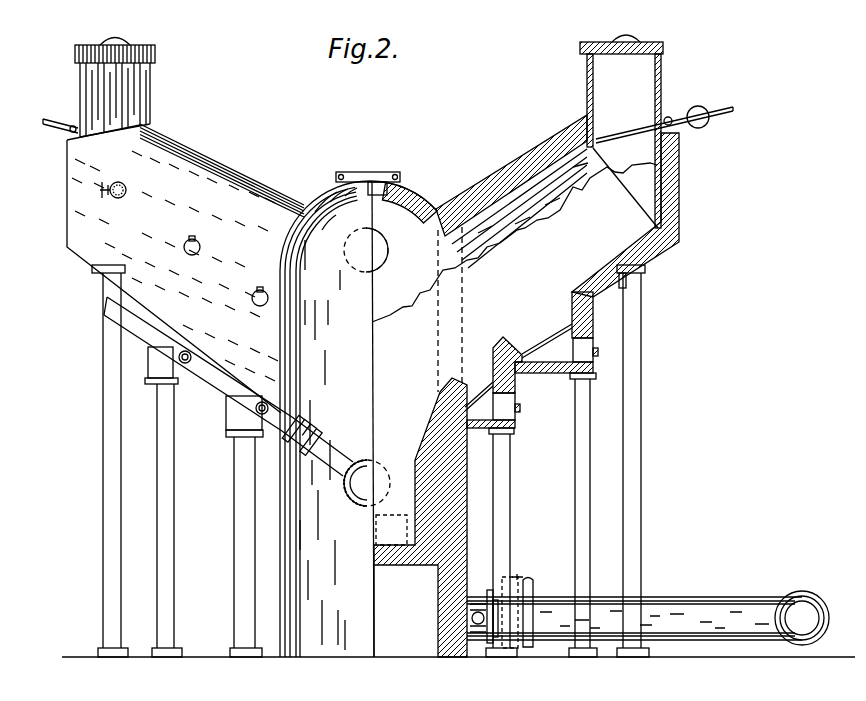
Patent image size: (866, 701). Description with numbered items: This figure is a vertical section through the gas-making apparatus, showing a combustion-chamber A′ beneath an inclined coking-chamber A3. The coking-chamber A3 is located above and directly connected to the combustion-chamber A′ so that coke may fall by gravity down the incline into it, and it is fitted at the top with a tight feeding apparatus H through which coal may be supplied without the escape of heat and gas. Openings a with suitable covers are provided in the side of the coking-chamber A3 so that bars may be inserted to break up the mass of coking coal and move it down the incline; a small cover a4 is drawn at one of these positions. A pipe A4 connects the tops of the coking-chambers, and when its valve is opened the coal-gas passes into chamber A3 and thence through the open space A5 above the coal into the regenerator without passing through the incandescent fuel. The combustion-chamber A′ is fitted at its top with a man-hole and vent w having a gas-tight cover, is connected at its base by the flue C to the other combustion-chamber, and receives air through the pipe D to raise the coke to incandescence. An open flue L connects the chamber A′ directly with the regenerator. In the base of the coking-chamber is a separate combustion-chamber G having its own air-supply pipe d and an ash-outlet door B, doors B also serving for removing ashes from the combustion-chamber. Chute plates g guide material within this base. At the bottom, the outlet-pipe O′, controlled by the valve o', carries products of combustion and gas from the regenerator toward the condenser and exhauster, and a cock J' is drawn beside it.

The tight feeding apparatus H is at (142, 96).
The combustion-chamber A′ is at (468, 410).
The man-hole and vent w is at (363, 172).
The open flue L is at (380, 242).
The coking-chamber A3 is at (462, 172).
The open space above the coal A5 is at (510, 215).
The opening a is at (200, 246).
The valve handle a4 is at (102, 182).
The pipe connecting the tops of the coking-chambers A4 is at (120, 198).
The air-pipe D is at (160, 333).
The air-supply pipe d is at (185, 363).
The flue C is at (358, 504).
The door B is at (594, 349).
The separate combustion-chamber G is at (516, 421).
The chute plate g is at (480, 398).
The outlet-pipe O′ is at (700, 597).
The valve o' is at (523, 610).
The cock J' is at (484, 594).